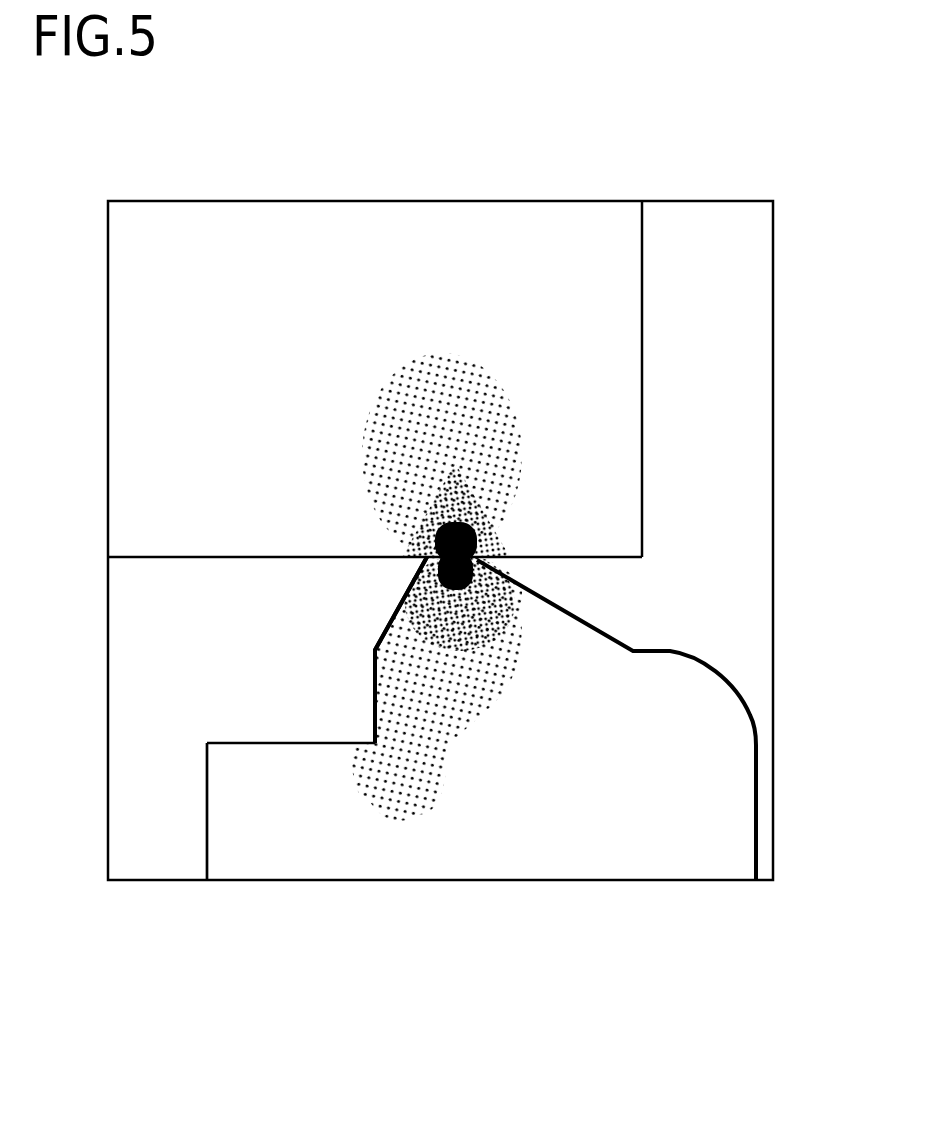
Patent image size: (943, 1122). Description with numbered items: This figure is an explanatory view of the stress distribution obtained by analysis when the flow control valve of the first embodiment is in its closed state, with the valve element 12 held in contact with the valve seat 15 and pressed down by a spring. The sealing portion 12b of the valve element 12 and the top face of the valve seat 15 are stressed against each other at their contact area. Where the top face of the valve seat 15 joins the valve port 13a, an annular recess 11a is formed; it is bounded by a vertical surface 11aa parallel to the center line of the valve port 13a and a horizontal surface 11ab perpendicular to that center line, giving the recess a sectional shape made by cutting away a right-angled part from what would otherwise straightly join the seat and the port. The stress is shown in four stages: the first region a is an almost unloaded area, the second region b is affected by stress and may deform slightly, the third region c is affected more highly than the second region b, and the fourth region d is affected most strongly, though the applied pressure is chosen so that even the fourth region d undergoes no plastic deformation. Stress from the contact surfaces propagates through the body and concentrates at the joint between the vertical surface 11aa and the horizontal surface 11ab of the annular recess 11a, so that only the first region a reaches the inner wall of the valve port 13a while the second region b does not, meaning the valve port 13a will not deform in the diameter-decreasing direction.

The valve element 12 is at (642, 310).
The sealing portion 12b is at (487, 594).
The valve seat 15 is at (435, 548).
The annular recess 11a is at (342, 712).
The vertical surface 11aa is at (377, 692).
The horizontal surface 11ab is at (265, 743).
The valve port 13a is at (207, 790).
The first region a is at (627, 405).
The second region b is at (497, 443).
The third region c is at (478, 499).
The fourth region d is at (473, 527).